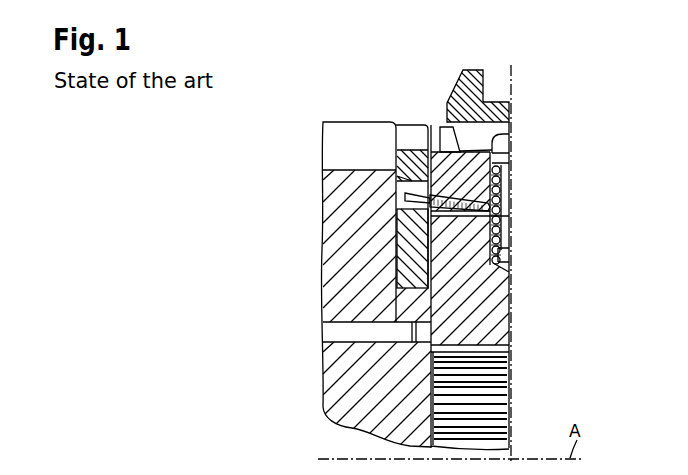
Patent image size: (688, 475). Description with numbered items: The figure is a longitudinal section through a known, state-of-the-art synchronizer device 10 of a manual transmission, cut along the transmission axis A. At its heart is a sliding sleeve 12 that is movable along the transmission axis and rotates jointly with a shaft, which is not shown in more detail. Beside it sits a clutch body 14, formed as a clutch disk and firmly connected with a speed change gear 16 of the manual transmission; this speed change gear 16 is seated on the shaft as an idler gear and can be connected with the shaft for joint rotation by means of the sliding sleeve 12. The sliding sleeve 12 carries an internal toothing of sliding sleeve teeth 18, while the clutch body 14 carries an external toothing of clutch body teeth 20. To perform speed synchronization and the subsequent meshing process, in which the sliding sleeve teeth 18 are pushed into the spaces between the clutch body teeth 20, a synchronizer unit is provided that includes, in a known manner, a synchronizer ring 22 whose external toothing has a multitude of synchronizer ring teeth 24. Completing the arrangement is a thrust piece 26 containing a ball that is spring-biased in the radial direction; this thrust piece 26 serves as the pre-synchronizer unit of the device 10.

The synchronizer device 10 is at (195, 152).
The sliding sleeve 12 is at (488, 19).
The clutch body 14 is at (403, 250).
The speed change gear 16 is at (350, 289).
The sliding sleeve teeth 18 is at (496, 135).
The clutch body teeth 20 is at (407, 130).
The synchronizer ring 22 is at (566, 142).
The synchronizer ring teeth 24 is at (438, 137).
The thrust piece 26 is at (564, 177).